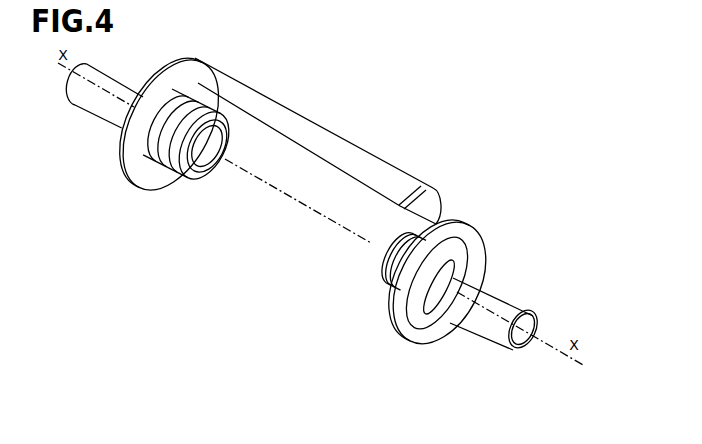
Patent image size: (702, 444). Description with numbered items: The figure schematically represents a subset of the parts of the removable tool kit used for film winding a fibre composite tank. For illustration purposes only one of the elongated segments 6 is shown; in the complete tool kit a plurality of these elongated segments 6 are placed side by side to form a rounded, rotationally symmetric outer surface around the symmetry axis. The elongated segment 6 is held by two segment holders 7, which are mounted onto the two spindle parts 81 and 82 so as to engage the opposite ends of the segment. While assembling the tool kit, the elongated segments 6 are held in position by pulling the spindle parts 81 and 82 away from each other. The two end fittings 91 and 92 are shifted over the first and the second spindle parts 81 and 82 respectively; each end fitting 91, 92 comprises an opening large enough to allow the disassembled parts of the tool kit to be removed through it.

The elongated segment 6 is at (338, 115).
The segment holder 7 is at (205, 172).
The first spindle part 81 is at (112, 108).
The second spindle part 82 is at (473, 313).
The end fitting 91 is at (143, 165).
The end fitting 92 is at (403, 323).